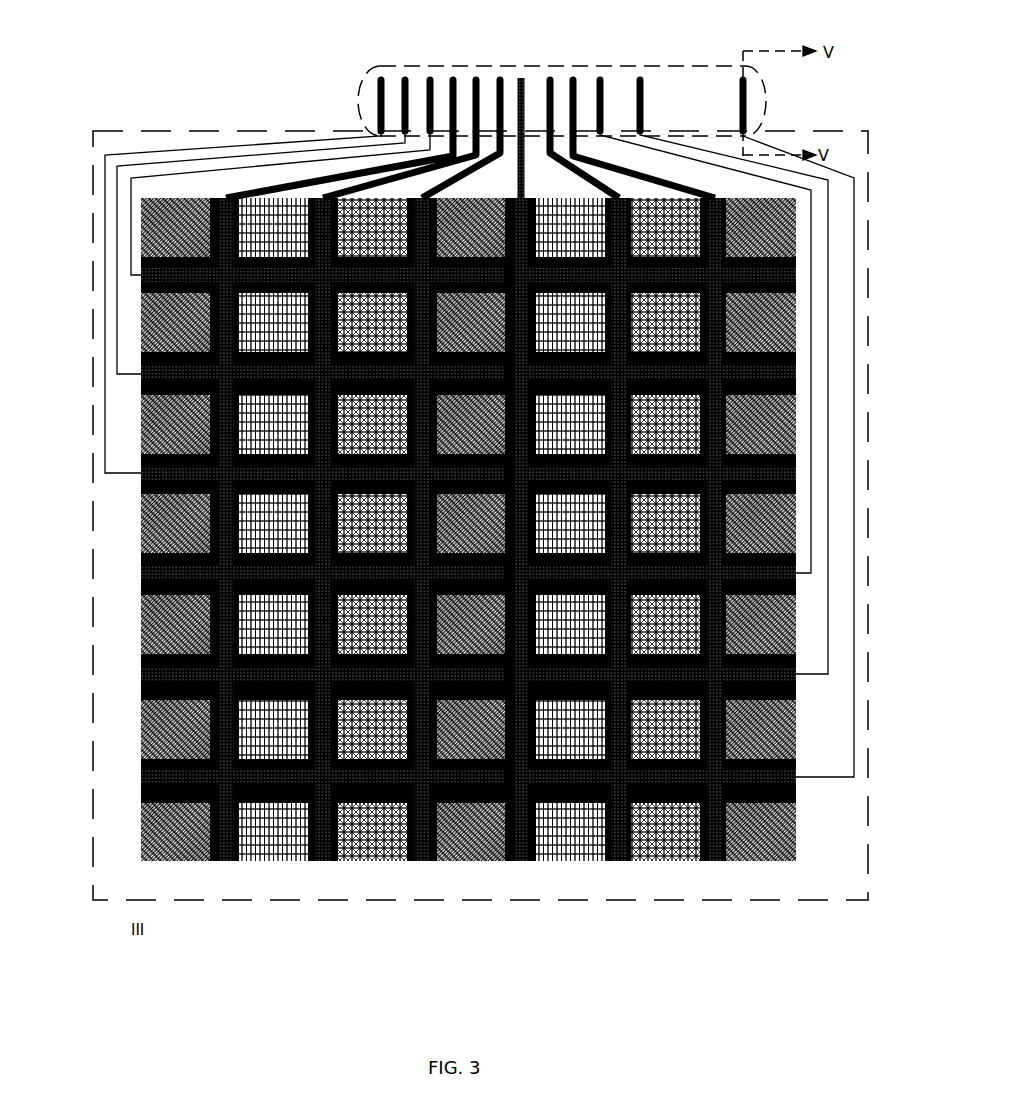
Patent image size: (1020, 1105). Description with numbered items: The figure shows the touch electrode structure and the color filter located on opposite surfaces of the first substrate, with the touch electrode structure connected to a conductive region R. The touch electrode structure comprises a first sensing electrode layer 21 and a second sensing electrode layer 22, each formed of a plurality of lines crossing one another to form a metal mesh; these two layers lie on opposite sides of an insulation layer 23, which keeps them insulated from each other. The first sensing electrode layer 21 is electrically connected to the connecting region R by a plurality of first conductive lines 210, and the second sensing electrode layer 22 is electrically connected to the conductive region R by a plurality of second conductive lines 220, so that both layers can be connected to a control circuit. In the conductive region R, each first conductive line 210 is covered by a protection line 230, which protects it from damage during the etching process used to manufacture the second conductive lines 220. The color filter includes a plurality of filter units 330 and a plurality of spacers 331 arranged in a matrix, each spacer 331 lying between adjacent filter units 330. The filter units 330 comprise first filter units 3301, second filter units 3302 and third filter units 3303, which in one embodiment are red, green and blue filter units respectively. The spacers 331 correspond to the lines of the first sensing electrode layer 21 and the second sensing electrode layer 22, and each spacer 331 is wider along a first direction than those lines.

The first sensing electrode layer 21 is at (419, 546).
The second sensing electrode layer 22 is at (612, 855).
The insulation layer 23 is at (92, 122).
The first conductive lines 210 is at (163, 138).
The second conductive lines 220 is at (247, 182).
The protection line 230 is at (742, 100).
The filter units 330 is at (301, 909).
The first filter unit 3301 is at (180, 855).
The second filter unit 3302 is at (262, 855).
The third filter unit 3303 is at (400, 881).
The spacers 331 is at (500, 855).
The conductive region R is at (553, 58).